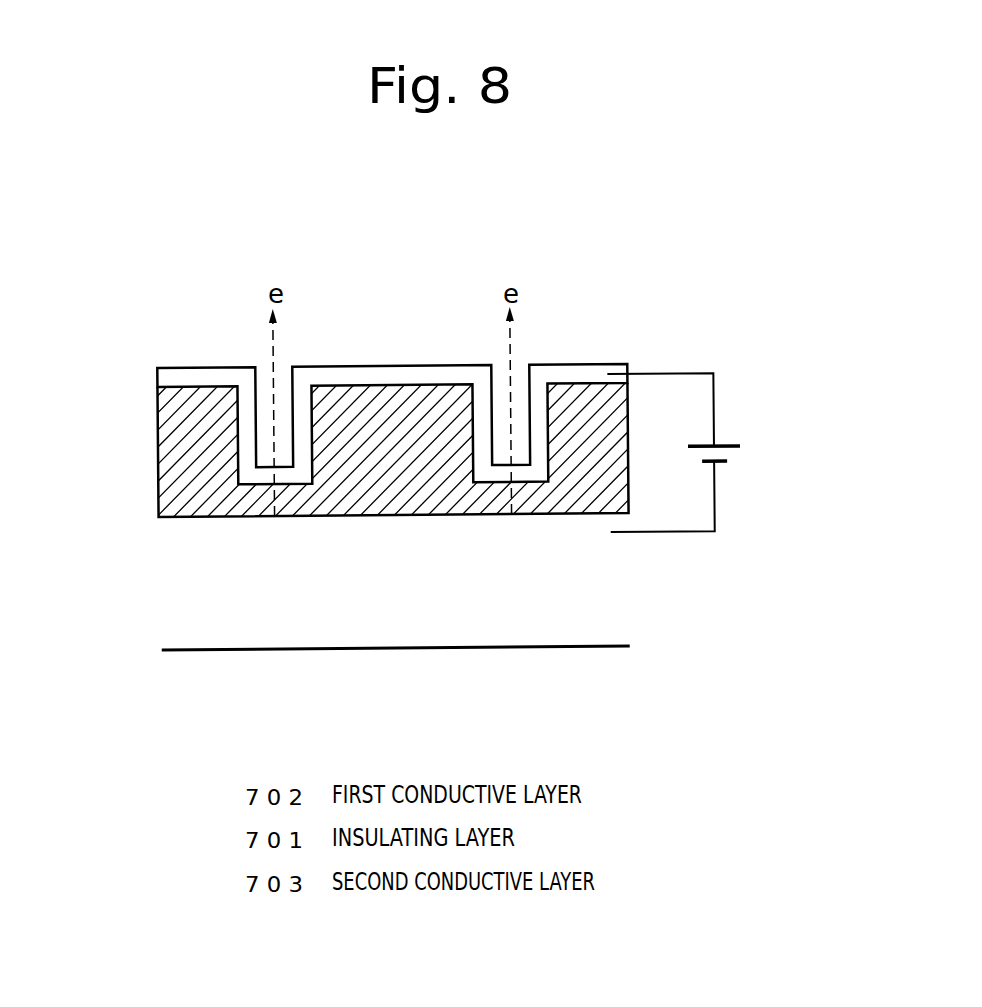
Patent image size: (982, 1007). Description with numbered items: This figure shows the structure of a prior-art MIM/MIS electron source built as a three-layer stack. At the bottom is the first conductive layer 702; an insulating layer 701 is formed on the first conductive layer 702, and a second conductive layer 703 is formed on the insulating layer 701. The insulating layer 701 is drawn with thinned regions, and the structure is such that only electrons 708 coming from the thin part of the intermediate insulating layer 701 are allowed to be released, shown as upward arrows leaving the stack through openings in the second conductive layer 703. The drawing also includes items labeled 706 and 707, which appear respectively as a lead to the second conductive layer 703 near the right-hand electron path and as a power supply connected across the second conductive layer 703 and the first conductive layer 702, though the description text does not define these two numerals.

The insulating layer 701 is at (170, 463).
The first conductive layer 702 is at (188, 577).
The second conductive layer 703 is at (160, 377).
The electron emission opening 706 is at (528, 350).
The power supply 707 is at (723, 453).
The electrons 708 is at (255, 325).